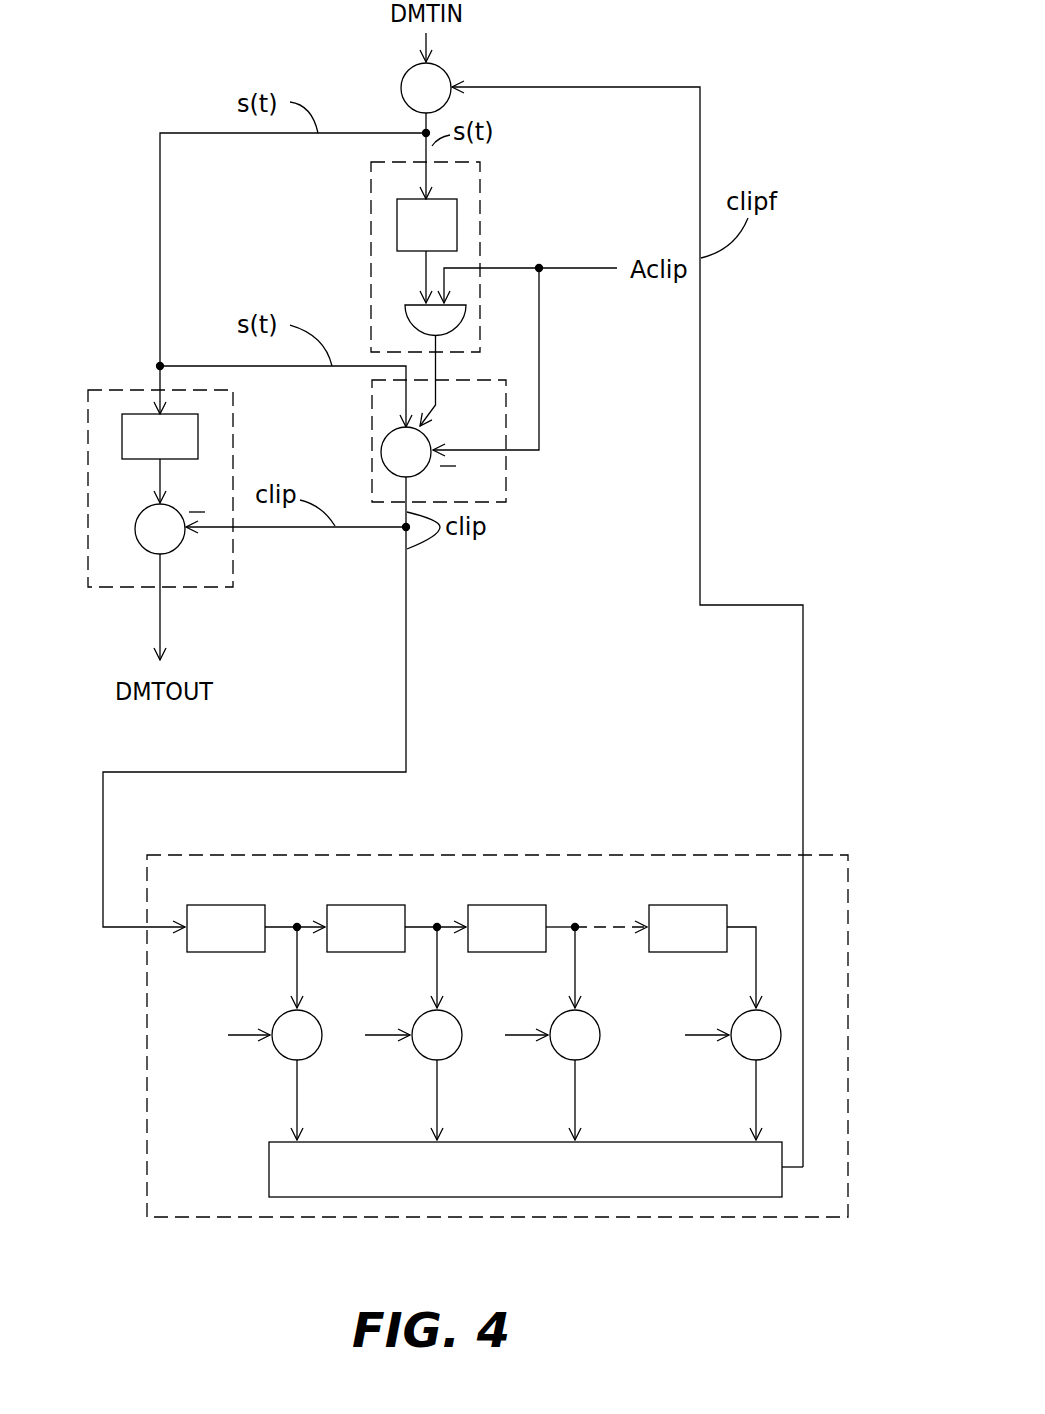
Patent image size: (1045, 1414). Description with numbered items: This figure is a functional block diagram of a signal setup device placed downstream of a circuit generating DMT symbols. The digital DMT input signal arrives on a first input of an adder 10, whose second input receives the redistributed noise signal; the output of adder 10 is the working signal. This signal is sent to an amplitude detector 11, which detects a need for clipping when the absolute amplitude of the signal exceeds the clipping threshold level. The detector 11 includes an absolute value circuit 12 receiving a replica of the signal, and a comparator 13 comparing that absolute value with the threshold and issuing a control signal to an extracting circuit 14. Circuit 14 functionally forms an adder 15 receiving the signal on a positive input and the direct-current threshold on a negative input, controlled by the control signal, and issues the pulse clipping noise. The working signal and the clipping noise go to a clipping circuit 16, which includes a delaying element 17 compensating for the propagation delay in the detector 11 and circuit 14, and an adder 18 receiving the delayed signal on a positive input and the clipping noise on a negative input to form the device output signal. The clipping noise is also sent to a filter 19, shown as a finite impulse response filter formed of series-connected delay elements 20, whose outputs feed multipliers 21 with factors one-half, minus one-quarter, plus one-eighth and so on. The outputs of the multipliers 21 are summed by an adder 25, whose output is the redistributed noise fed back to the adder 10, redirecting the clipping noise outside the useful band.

The adder 10 is at (445, 70).
The amplitude detector 11 is at (482, 198).
The absolute value circuit 12 is at (397, 214).
The comparator 13 is at (407, 305).
The extracting circuit 14 is at (510, 497).
The adder 15 is at (382, 445).
The clipping circuit 16 is at (207, 592).
The delaying element 17 is at (122, 432).
The adder 18 is at (135, 528).
The filter 19 is at (516, 848).
The delay elements 20 is at (474, 905).
The multipliers 21 is at (470, 1047).
The adder 25 is at (269, 1160).